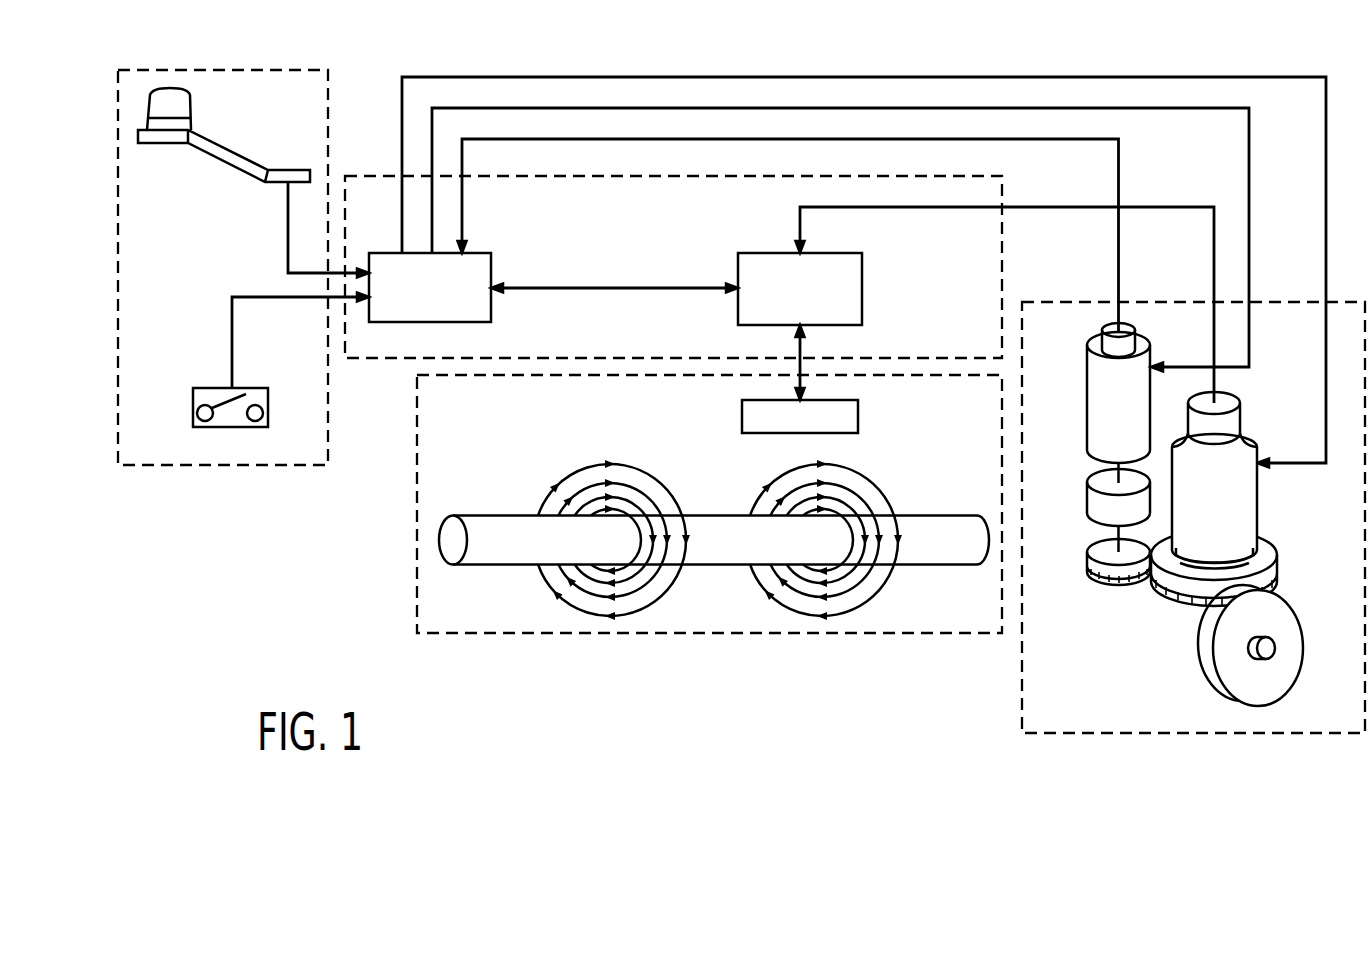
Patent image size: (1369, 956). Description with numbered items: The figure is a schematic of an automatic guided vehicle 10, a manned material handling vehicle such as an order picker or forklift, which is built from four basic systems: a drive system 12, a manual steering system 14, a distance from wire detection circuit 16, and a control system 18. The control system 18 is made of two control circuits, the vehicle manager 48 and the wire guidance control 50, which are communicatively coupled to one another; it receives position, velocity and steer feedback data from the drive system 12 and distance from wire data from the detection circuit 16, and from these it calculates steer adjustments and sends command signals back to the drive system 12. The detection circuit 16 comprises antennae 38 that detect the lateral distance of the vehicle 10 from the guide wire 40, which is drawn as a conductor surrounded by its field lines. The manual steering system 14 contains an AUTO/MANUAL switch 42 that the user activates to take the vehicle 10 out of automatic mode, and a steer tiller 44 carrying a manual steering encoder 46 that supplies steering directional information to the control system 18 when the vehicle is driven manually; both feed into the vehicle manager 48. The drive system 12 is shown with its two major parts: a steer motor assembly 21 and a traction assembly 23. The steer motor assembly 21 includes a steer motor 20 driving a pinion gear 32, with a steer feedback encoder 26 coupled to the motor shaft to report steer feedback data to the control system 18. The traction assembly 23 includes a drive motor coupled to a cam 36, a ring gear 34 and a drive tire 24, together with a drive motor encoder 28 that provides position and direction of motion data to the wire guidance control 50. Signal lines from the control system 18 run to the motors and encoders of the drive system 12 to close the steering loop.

The automatic guided vehicle 10 is at (256, 618).
The drive system 12 is at (1190, 734).
The manual steering system 14 is at (215, 466).
The distance from wire detection circuit 16 is at (707, 634).
The control system 18 is at (368, 175).
The steer motor 20 is at (1087, 426).
The steer motor assembly 21 is at (1075, 402).
The traction assembly 23 is at (1281, 527).
The drive tire 24 is at (1256, 681).
The steer feedback encoder 26 is at (1140, 335).
The drive motor encoder 28 is at (1240, 413).
The pinion gear 32 is at (1093, 580).
The ring gear 34 is at (1186, 608).
The cam 36 is at (1270, 546).
The antenna 38 is at (742, 412).
The guide wire 40 is at (450, 538).
The AUTO/MANUAL switch 42 is at (193, 405).
The steer tiller 44 is at (188, 90).
The manual steering encoder 46 is at (198, 131).
The vehicle manager 48 is at (432, 322).
The wire guidance control 50 is at (862, 283).